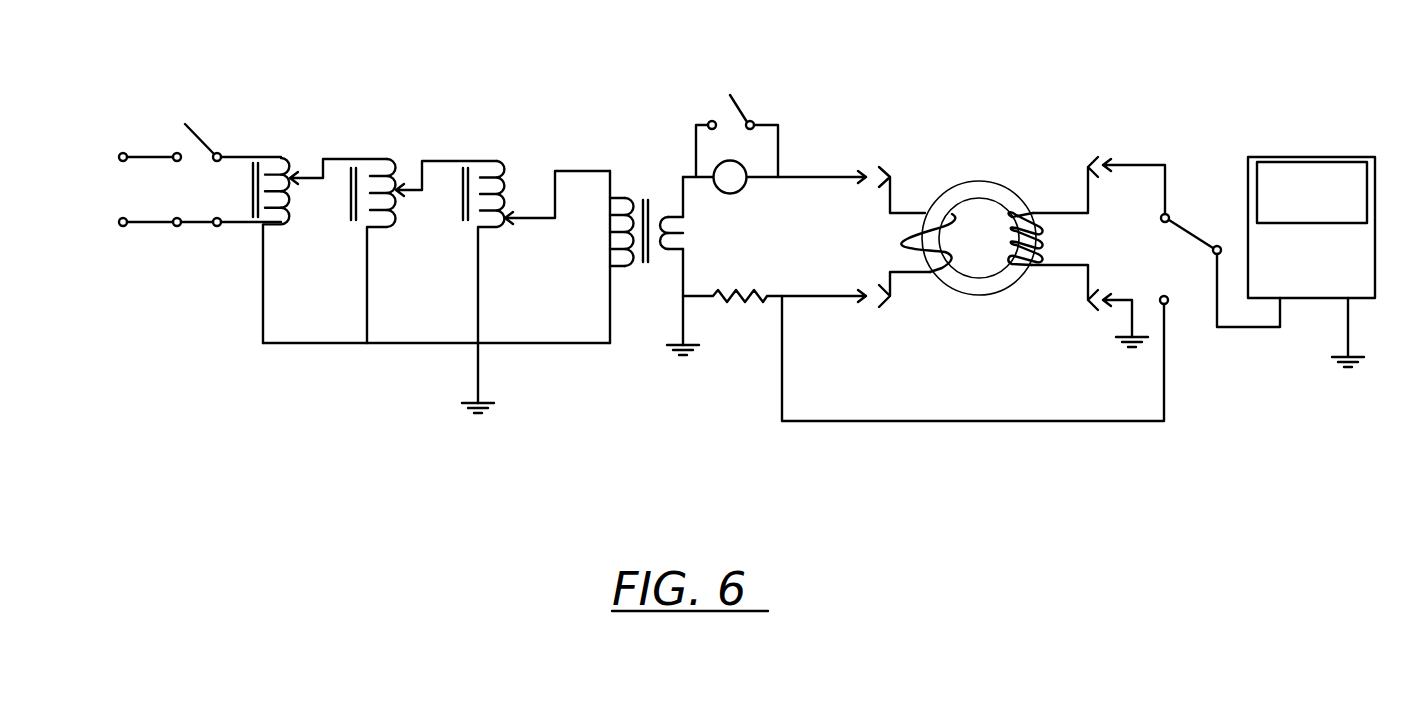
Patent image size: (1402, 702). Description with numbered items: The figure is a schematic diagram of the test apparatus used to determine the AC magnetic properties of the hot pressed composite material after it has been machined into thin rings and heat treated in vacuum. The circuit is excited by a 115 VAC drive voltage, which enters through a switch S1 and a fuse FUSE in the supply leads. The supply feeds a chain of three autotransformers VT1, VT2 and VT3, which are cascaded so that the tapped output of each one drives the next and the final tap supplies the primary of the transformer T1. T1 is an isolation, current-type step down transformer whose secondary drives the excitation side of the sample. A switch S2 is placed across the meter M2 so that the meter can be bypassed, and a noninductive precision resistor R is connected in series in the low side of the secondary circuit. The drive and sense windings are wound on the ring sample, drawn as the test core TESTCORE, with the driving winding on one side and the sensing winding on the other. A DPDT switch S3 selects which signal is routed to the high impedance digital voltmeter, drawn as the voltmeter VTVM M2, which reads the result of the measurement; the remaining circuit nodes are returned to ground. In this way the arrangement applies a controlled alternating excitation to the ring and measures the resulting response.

The power switch S1 is at (200, 129).
The 115 VAC drive voltage 115VAC is at (92, 189).
The fuse FUSE is at (200, 242).
The autotransformer VT1 is at (320, 233).
The autotransformer VT2 is at (424, 234).
The autotransformer VT3 is at (536, 269).
The isolation, current-type step down transformer T1 is at (654, 253).
The switch S2 is at (737, 126).
The high impedance digital voltmeter M2 is at (774, 177).
The noninductive precision resistor R is at (774, 309).
The test core TESTCORE is at (971, 212).
The DPDT switch S3 is at (1191, 243).
The vacuum tube voltmeter VTVM M2 VTVM is at (1311, 262).